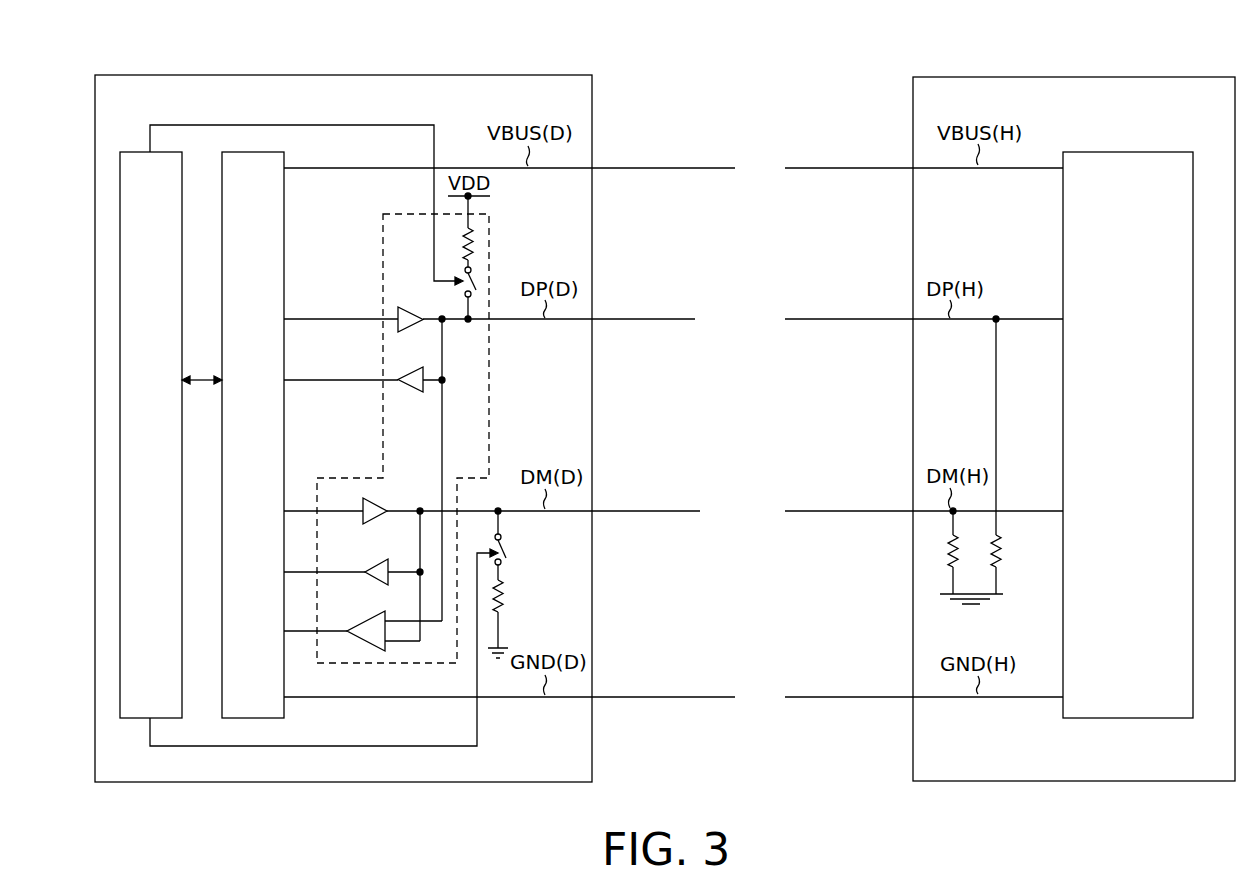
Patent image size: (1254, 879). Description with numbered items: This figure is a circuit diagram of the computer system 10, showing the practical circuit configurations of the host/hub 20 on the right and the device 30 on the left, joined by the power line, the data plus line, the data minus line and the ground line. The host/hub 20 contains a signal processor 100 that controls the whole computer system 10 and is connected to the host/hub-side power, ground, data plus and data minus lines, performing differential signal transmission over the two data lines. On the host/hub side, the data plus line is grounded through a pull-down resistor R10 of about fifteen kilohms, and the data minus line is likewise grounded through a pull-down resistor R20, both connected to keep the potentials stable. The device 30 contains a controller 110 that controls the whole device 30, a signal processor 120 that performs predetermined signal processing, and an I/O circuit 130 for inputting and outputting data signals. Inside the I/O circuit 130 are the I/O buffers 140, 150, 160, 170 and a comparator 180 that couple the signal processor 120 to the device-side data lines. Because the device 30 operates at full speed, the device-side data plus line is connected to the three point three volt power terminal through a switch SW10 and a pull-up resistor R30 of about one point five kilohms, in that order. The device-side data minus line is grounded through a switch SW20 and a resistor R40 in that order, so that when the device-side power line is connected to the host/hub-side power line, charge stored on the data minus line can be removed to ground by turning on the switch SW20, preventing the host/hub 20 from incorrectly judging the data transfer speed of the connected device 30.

The computer system 10 is at (757, 804).
The host/hub 20 is at (988, 77).
The device 30 is at (122, 75).
The signal processor 100 is at (1113, 152).
The controller 110 is at (119, 177).
The signal processor 120 is at (222, 200).
The I/O circuit 130 is at (383, 257).
The I/O buffer 140 is at (410, 306).
The I/O buffer 150 is at (410, 393).
The I/O buffer 160 is at (366, 522).
The I/O buffer 170 is at (376, 586).
The comparator 180 is at (370, 652).
The pull-up resistor R30 is at (478, 246).
The switch SW10 is at (481, 286).
The switch SW20 is at (506, 553).
The resistor R40 is at (504, 595).
The pull-down resistor R10 is at (1001, 548).
The pull-down resistor R20 is at (950, 550).